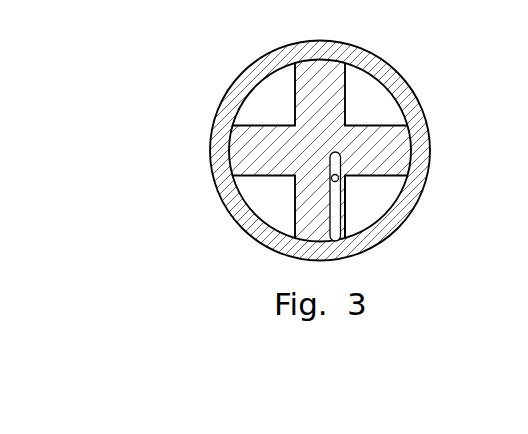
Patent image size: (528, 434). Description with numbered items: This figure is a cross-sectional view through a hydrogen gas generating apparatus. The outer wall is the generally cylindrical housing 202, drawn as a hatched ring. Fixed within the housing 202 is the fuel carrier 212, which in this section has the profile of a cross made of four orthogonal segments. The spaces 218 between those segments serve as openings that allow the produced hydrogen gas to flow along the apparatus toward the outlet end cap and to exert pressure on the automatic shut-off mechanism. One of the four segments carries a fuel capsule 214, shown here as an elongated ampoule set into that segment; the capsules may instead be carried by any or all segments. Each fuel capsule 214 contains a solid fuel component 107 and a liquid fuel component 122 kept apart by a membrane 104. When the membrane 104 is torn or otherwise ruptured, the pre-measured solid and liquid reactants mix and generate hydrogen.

The housing 202 is at (220, 168).
The fuel carrier 212 is at (324, 70).
The spaces 218 is at (381, 90).
The solid fuel component 107 is at (337, 152).
The membrane 104 is at (338, 177).
The liquid fuel component 122 is at (335, 202).
The fuel capsule 214 is at (347, 207).